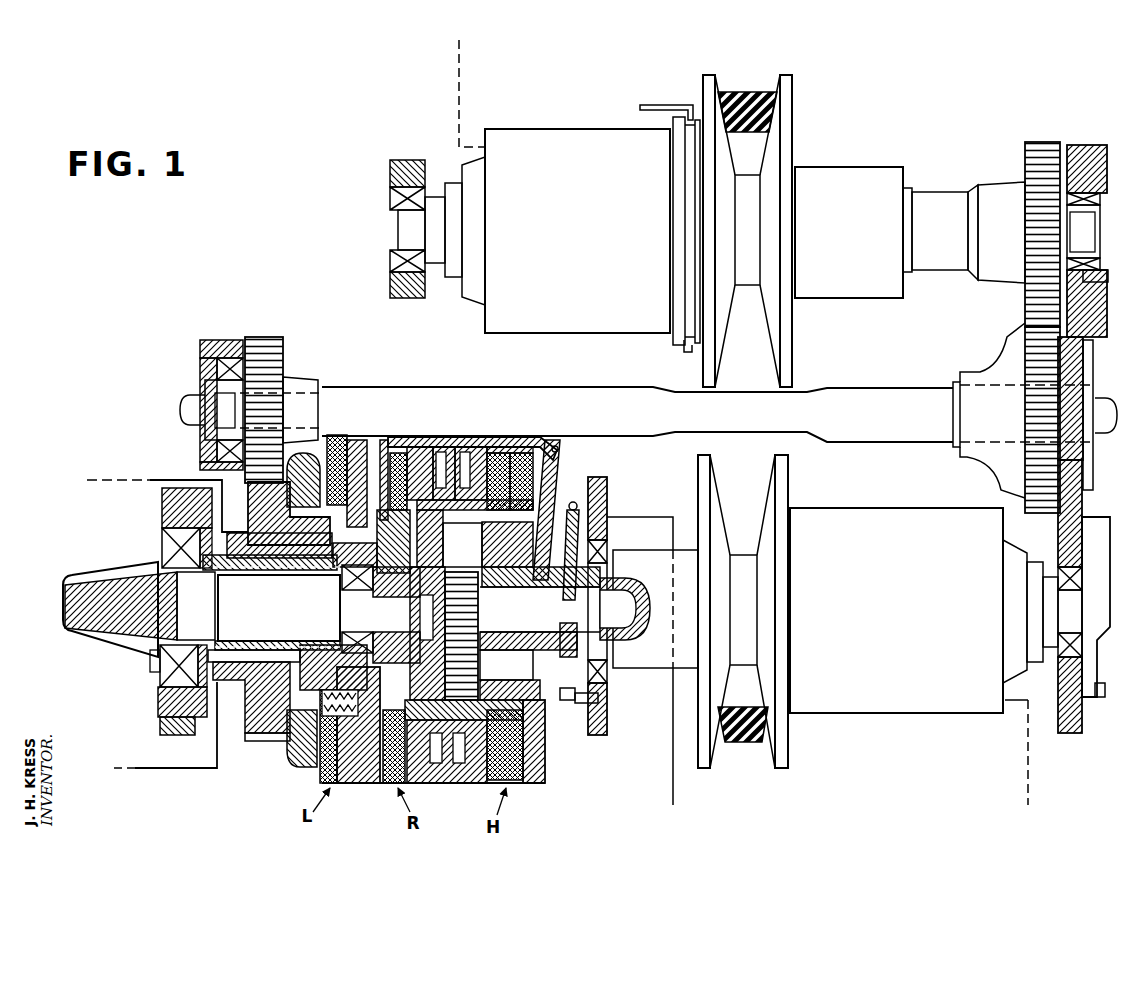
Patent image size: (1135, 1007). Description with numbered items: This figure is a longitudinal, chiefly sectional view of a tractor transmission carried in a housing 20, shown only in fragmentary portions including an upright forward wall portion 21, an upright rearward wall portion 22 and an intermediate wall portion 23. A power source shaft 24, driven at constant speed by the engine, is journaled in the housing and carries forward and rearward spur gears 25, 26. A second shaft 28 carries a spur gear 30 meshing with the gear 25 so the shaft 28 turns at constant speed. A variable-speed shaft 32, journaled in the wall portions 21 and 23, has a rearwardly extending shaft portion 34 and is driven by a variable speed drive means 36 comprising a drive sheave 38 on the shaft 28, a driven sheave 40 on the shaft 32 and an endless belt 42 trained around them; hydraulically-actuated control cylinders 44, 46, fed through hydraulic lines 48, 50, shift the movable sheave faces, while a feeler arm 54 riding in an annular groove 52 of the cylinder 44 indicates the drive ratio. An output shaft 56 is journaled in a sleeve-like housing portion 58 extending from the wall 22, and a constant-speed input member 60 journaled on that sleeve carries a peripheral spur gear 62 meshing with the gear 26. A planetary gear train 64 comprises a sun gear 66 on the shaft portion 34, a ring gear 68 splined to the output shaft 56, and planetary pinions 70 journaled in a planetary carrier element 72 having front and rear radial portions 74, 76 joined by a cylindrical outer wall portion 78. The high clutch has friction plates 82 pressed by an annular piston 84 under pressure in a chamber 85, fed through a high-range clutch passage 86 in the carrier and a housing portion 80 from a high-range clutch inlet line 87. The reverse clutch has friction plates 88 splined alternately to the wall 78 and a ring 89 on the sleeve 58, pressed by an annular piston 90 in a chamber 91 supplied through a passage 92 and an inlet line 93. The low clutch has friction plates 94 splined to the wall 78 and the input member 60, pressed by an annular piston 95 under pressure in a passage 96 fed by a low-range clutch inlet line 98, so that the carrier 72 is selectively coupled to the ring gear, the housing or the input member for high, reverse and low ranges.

The housing 20 is at (1088, 138).
The upright forward wall portion 21 is at (1083, 510).
The upright rearward wall portion 22 is at (158, 718).
The intermediate wall portion 23 is at (598, 735).
The power source shaft 24 is at (905, 385).
The forward spur gear 25 is at (1042, 505).
The rearward spur gear 26 is at (264, 337).
The second shaft 28 is at (925, 188).
The spur gear 30 is at (1036, 142).
The variable-speed shaft 32 is at (645, 672).
The shaft portion 34 is at (565, 603).
The variable speed drive means 36 is at (815, 337).
The drive sheave 38 is at (792, 120).
The driven sheave 40 is at (782, 727).
The endless belt 42 is at (780, 446).
The control cylinder 44 is at (546, 131).
The control cylinder 46 is at (924, 610).
The hydraulic line 48 is at (461, 78).
The hydraulic line 50 is at (1030, 762).
The annular groove 52 is at (686, 347).
The feeler arm 54 is at (653, 105).
The output shaft 56 is at (139, 609).
The sleeve-like housing portion 58 is at (310, 650).
The constant-speed input member 60 is at (244, 710).
The peripheral spur gear 62 is at (264, 741).
The planetary gear train 64 is at (572, 480).
The sun gear 66 is at (479, 610).
The ring gear 68 is at (475, 533).
The planetary pinions 70 is at (490, 640).
The planetary carrier element 72 is at (510, 675).
The front radial portion 74 is at (538, 735).
The rear radial portion 76 is at (375, 742).
The cylindrical outer wall portion 78 is at (452, 783).
The housing portion 80 is at (555, 662).
The friction plates 82 is at (528, 460).
The annular piston 84 is at (492, 458).
The chamber 85 is at (470, 460).
The high-range clutch passage 86 is at (562, 455).
The high-range clutch inlet line 87 is at (632, 517).
The friction plates 88 is at (400, 452).
The ring 89 is at (395, 633).
The annular piston 90 is at (415, 462).
The chamber 91 is at (437, 465).
The passage 92 is at (290, 562).
The inlet line 93 is at (138, 478).
The friction plates 94 is at (343, 445).
The annular piston 95 is at (295, 745).
The passage 96 is at (258, 653).
The low-range clutch inlet line 98 is at (172, 768).